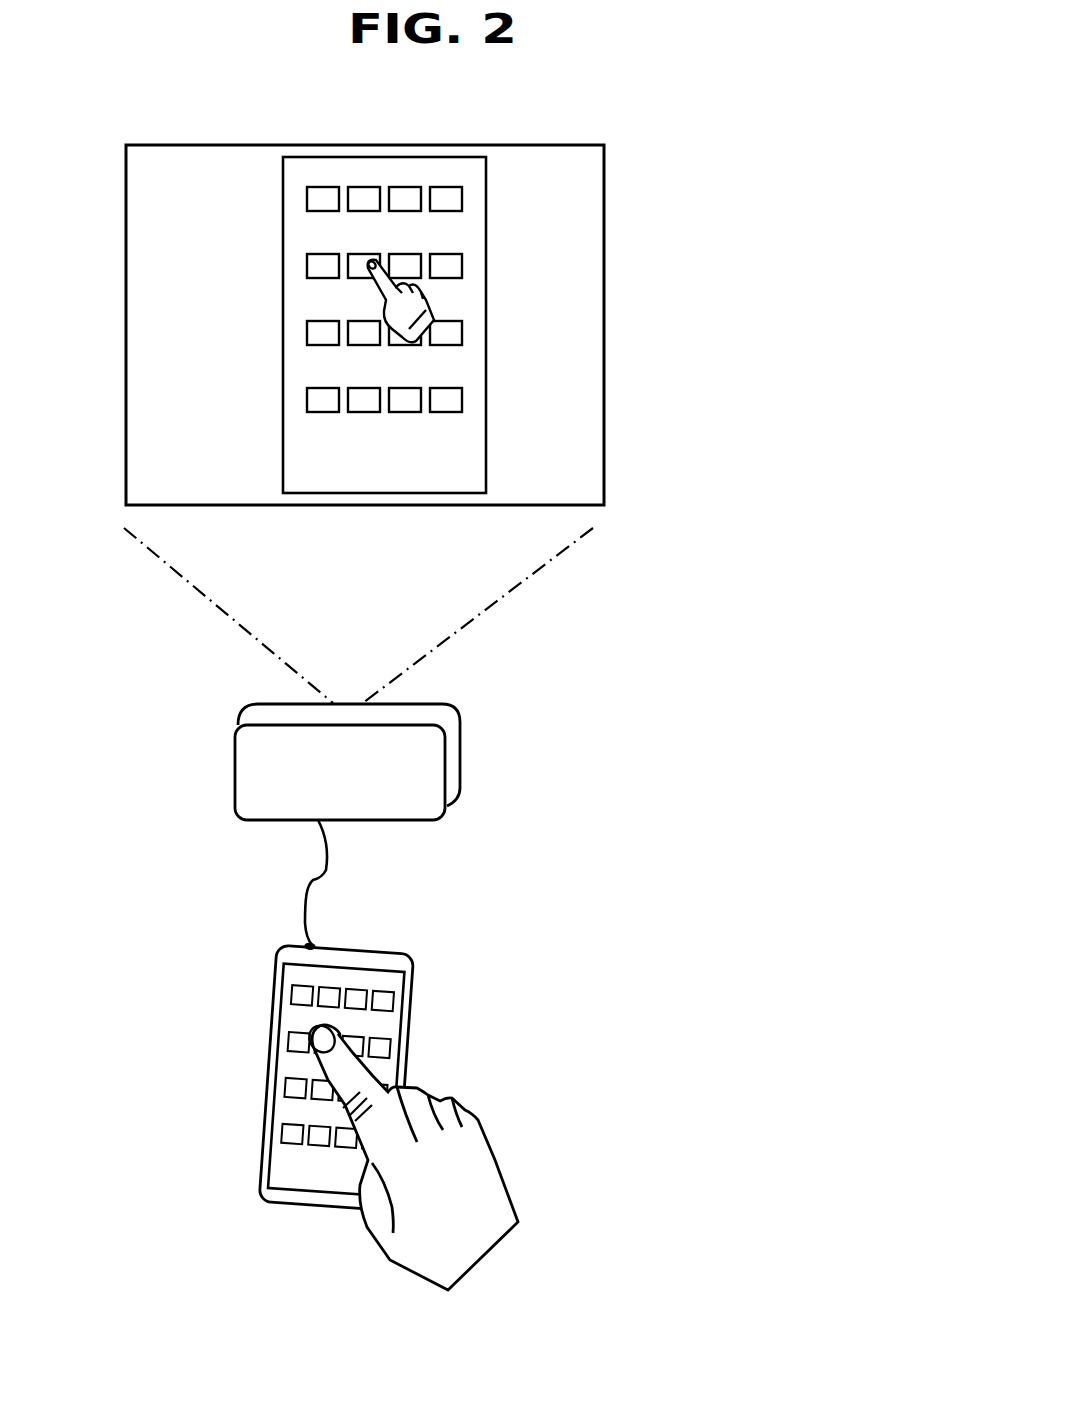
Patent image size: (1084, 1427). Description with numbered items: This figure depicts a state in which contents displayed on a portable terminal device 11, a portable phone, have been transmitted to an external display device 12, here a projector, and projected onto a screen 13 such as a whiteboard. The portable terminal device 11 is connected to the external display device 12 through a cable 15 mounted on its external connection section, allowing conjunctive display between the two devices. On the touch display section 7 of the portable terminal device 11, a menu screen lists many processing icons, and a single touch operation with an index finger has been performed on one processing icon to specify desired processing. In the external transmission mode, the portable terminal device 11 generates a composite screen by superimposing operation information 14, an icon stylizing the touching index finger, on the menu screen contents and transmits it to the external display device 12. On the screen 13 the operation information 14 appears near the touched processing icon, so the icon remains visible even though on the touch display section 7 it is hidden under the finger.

The screen 13 is at (547, 145).
The operation information 14 is at (430, 310).
The external display device 12 is at (462, 737).
The cable 15 is at (328, 853).
The portable terminal device 11 is at (553, 1064).
The touch display section 7 is at (388, 1027).